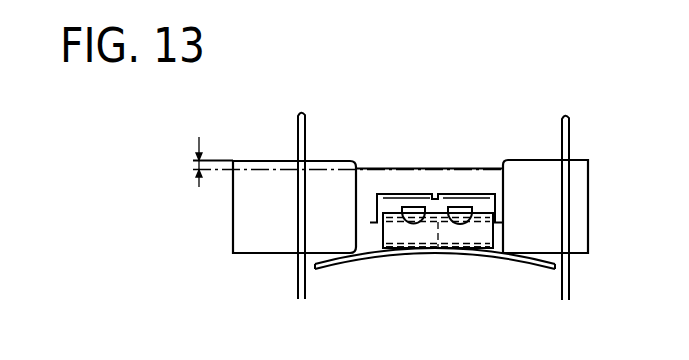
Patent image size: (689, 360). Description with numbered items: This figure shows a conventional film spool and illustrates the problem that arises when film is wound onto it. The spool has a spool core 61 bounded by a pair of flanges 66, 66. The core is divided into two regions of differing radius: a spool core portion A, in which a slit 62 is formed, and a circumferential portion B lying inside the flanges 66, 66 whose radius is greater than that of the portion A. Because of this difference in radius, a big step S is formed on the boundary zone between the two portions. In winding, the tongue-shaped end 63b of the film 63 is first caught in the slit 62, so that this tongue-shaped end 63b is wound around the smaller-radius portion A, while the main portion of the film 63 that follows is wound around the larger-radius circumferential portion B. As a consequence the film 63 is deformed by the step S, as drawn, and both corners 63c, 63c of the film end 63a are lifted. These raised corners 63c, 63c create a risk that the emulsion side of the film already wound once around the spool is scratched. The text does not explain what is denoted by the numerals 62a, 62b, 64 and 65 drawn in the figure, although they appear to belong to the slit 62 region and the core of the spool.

The step S is at (193, 168).
The spool core portion A is at (366, 168).
The circumferential portion B is at (320, 160).
The spool core 61 is at (481, 194).
The slit 62 is at (417, 198).
The slider block bottom surface 62a is at (437, 250).
The slider block end portion 62b is at (495, 210).
The film 63 is at (403, 260).
The film end 63a is at (366, 268).
The tongue-shaped end 63b is at (482, 258).
The corners 63c is at (317, 272).
The rollers 64 is at (402, 206).
The central slot 65 is at (436, 197).
The flanges 66 is at (300, 130).